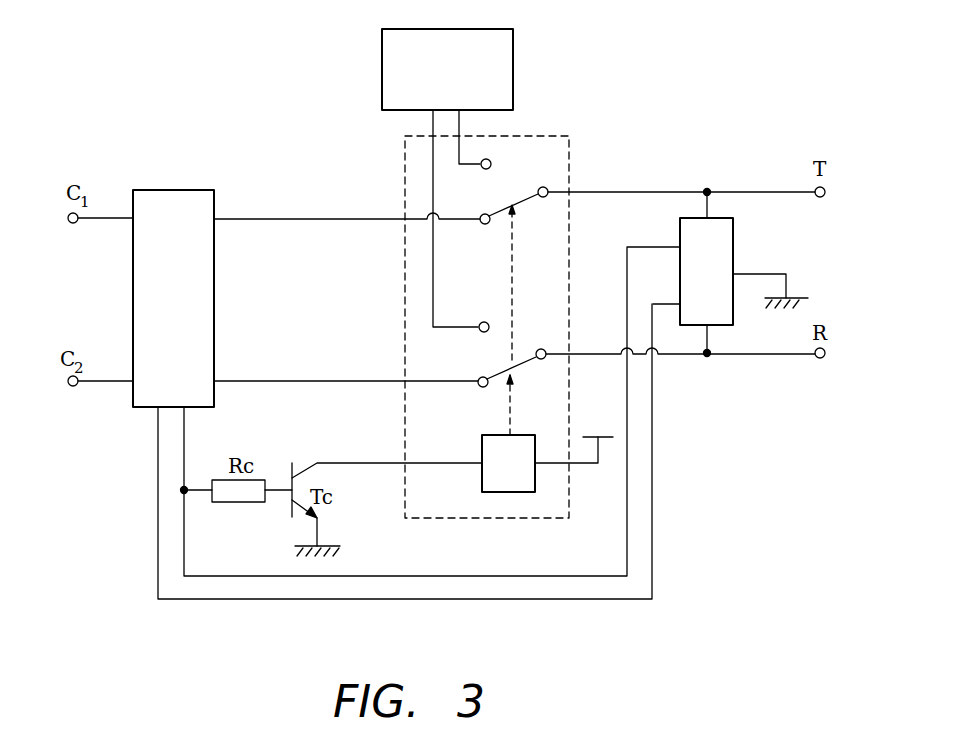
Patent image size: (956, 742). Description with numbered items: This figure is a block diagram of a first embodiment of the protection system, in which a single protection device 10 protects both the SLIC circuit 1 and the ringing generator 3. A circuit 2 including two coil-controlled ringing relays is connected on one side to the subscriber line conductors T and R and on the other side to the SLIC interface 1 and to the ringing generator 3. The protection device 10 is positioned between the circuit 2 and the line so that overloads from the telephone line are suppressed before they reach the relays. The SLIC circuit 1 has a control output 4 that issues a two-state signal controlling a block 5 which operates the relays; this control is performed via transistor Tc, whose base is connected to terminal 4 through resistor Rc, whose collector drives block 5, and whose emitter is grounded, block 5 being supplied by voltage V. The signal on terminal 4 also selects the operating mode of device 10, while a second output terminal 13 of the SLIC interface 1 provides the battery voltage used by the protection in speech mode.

The SLIC circuit 1 is at (173, 190).
The circuit including ringing relays 2 is at (569, 160).
The ringing generator 3 is at (513, 70).
The control output 4 is at (184, 436).
The block 5 is at (510, 492).
The protection device 10 is at (733, 240).
The second output terminal 13 is at (158, 465).